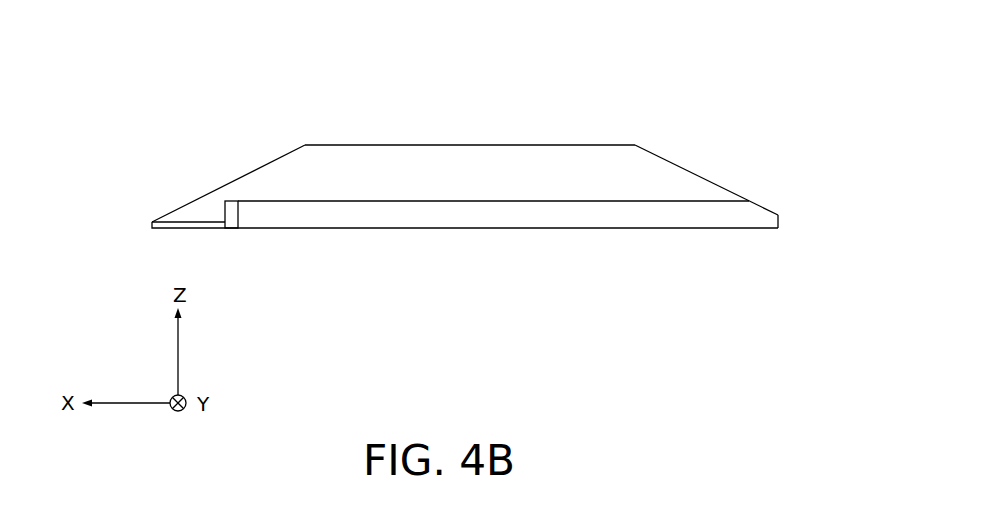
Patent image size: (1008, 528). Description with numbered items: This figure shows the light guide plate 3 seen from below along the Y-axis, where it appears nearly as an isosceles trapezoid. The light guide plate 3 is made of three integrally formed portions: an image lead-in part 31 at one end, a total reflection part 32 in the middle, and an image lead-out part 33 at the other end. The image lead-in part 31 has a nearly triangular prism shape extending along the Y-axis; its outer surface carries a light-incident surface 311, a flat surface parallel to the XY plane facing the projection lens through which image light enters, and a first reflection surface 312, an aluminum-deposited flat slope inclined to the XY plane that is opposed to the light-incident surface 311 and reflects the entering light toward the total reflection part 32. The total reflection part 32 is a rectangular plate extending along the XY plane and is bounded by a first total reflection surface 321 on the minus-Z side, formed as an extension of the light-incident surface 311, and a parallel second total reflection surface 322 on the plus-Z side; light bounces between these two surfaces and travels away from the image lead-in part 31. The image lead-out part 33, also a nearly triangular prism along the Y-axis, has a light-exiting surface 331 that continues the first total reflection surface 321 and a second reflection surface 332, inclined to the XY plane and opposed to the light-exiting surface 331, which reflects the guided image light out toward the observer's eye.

The light guide plate 3 is at (138, 159).
The image lead-in part 31 is at (683, 175).
The light-incident surface 311 is at (710, 229).
The first reflection surface 312 is at (716, 180).
The total reflection part 32 is at (455, 158).
The first total reflection surface 321 is at (503, 229).
The second total reflection surface 322 is at (557, 145).
The image lead-out part 33 is at (265, 180).
The light-exiting surface 331 is at (233, 229).
The second reflection surface 332 is at (291, 152).